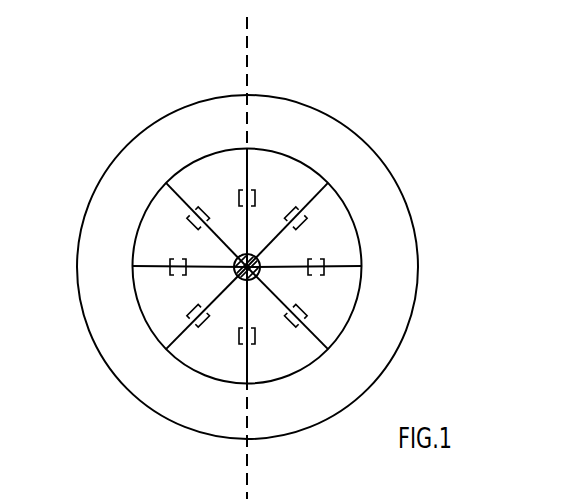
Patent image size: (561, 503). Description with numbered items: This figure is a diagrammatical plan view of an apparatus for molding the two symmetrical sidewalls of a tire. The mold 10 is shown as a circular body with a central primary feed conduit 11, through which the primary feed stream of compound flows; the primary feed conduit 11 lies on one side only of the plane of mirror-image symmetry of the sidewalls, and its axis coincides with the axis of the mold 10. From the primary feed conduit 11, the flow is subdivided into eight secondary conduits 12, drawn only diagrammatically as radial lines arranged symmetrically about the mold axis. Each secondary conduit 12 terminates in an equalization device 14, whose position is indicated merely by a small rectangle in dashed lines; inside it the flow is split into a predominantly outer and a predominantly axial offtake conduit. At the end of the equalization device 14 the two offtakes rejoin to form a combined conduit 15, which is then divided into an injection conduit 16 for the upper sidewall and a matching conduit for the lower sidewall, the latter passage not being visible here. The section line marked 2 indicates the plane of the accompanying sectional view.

The section line 2- 2 is at (282, 17).
The mold 10 is at (373, 149).
The primary feed conduit 11 is at (228, 273).
The secondary conduits 12 is at (249, 232).
The equalization device 14 is at (328, 263).
The combined conduit 15 is at (313, 325).
The injection conduit 16 is at (330, 337).